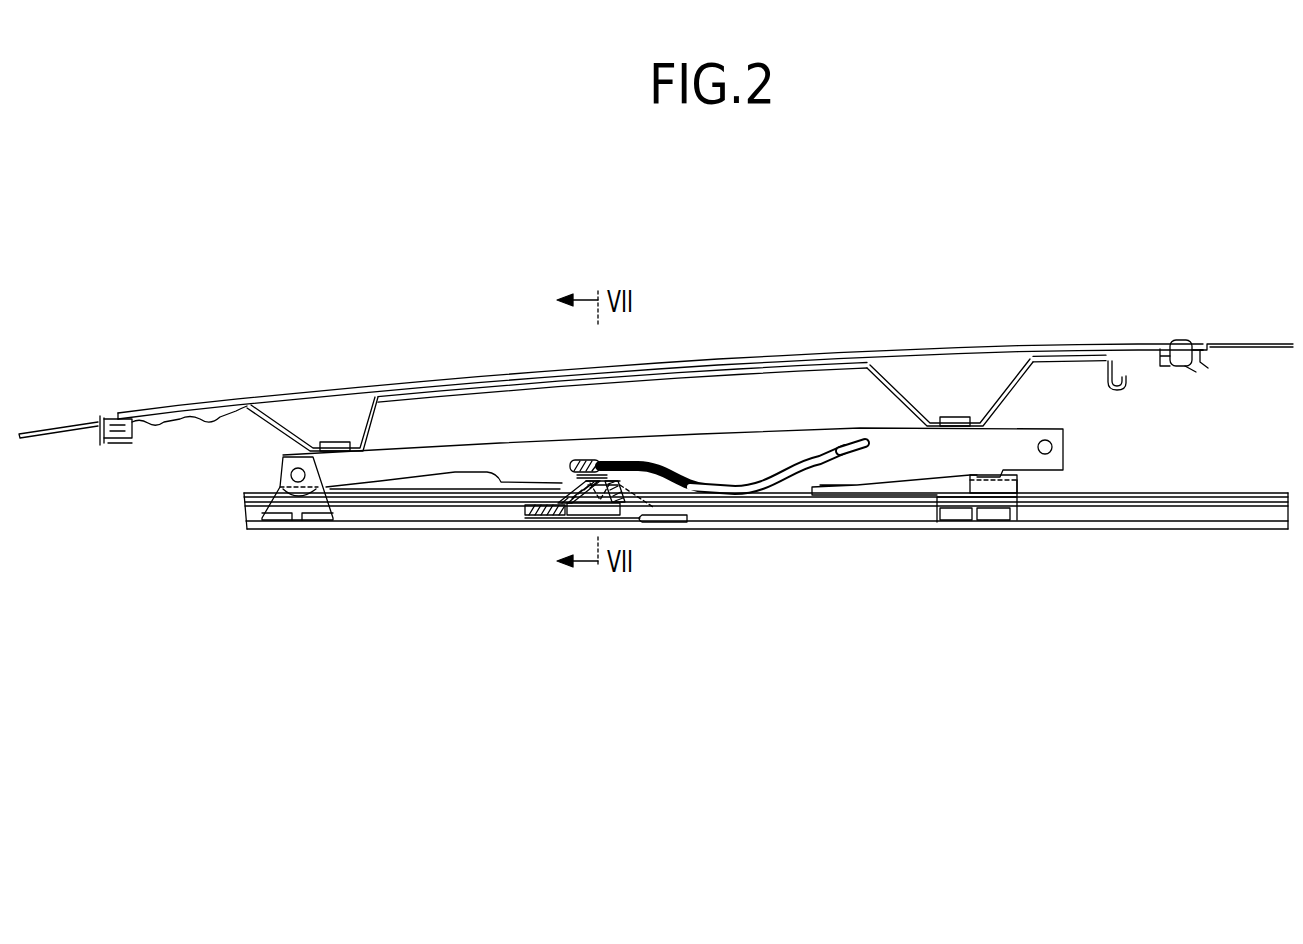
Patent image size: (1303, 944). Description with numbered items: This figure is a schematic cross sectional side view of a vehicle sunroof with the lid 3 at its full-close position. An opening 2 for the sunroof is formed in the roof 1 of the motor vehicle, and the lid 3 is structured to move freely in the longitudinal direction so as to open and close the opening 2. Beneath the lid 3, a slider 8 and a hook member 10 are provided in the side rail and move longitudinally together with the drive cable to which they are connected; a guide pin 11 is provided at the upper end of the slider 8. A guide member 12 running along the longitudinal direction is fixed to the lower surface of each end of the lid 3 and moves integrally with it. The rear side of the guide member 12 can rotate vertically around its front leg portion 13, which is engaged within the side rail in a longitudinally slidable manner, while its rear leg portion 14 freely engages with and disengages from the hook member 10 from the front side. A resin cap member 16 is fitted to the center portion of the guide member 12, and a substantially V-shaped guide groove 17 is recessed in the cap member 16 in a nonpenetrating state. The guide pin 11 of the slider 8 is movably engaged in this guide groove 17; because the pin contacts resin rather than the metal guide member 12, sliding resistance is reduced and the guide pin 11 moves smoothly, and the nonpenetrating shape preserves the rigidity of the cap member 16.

The roof 1 is at (1240, 343).
The opening 2 is at (108, 415).
The lid 3 is at (968, 350).
The slider 8 is at (650, 518).
The hook member 10 is at (1033, 520).
The guide pin 11 is at (572, 462).
The guide member 12 is at (897, 465).
The front leg portion 13 is at (288, 510).
The rear leg portion 14 is at (1017, 486).
The cap member 16 is at (850, 437).
The guide groove 17 is at (757, 492).